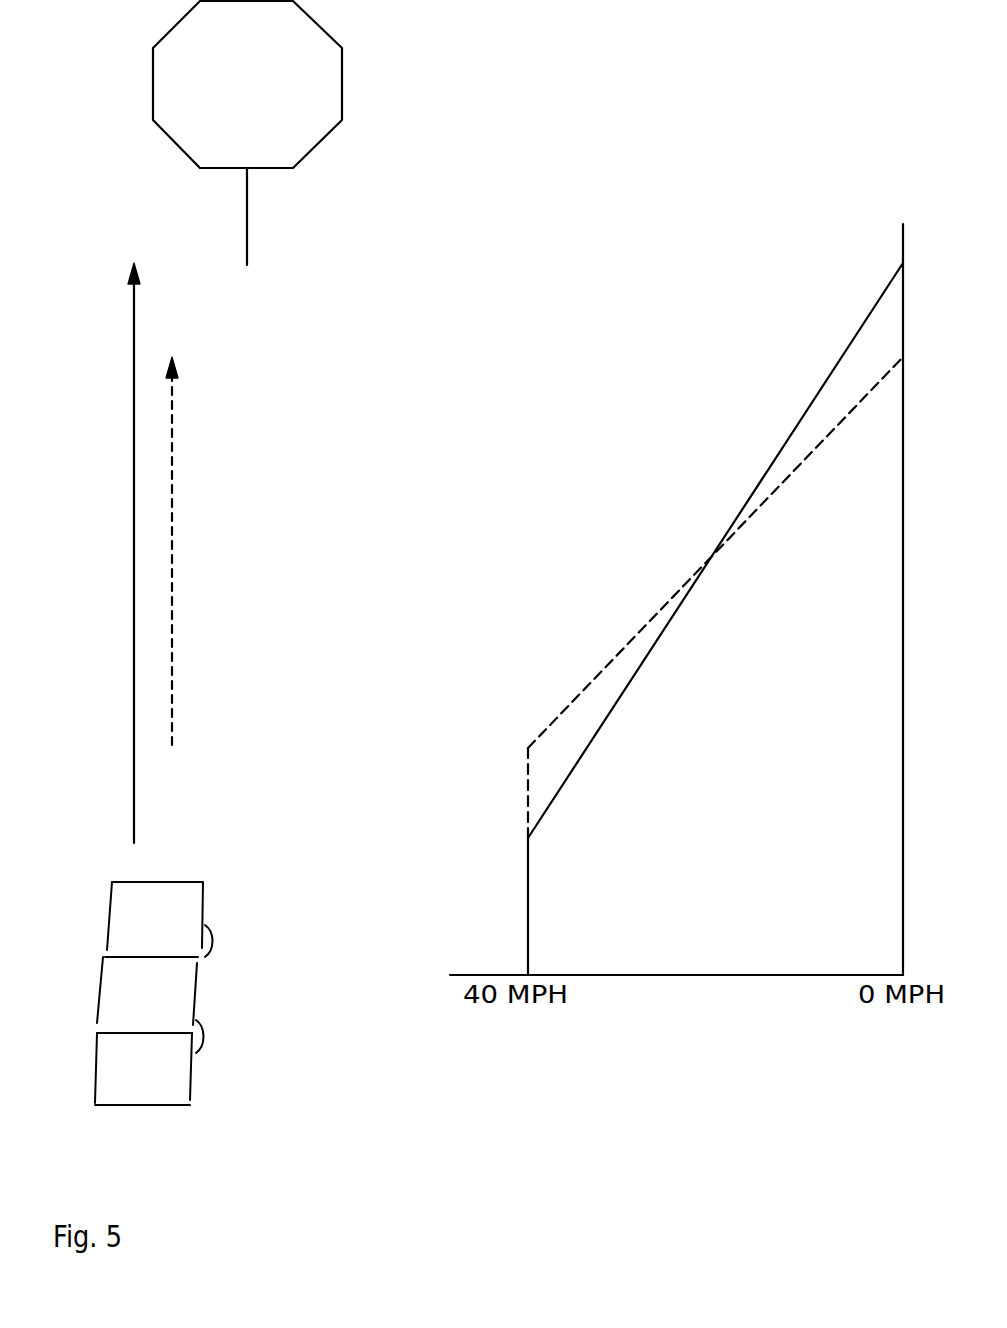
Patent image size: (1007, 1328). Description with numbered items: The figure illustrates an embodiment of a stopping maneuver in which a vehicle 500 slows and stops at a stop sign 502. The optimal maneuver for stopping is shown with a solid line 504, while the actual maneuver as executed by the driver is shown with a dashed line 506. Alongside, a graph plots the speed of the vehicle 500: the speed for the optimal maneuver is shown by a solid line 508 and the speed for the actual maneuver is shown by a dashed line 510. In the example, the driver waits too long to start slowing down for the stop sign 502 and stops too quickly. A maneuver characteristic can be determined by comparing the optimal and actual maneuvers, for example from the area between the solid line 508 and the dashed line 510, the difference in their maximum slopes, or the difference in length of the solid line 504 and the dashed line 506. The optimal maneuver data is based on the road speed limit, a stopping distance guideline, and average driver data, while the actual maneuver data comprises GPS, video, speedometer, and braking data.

The vehicle 500 is at (238, 952).
The stop sign 502 is at (352, 73).
The solid line 504 is at (133, 580).
The dashed line 506 is at (172, 610).
The solid line 508 is at (610, 720).
The dashed line 510 is at (592, 685).